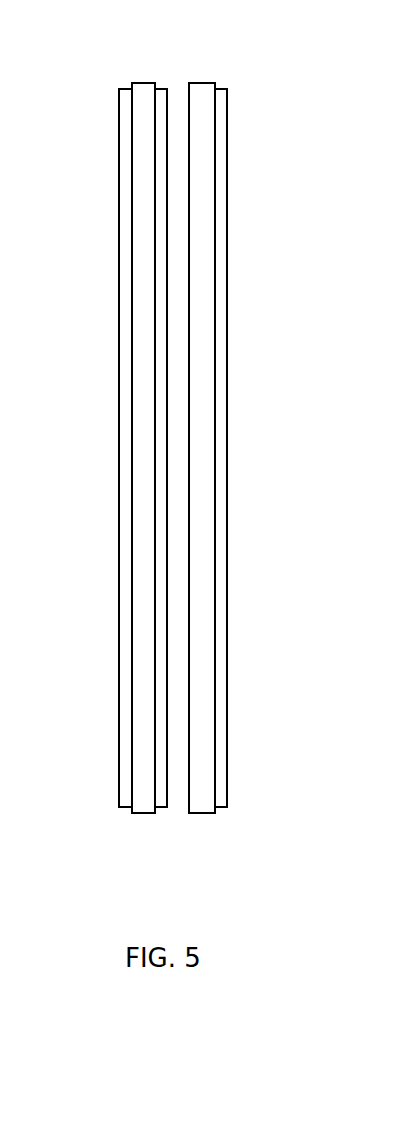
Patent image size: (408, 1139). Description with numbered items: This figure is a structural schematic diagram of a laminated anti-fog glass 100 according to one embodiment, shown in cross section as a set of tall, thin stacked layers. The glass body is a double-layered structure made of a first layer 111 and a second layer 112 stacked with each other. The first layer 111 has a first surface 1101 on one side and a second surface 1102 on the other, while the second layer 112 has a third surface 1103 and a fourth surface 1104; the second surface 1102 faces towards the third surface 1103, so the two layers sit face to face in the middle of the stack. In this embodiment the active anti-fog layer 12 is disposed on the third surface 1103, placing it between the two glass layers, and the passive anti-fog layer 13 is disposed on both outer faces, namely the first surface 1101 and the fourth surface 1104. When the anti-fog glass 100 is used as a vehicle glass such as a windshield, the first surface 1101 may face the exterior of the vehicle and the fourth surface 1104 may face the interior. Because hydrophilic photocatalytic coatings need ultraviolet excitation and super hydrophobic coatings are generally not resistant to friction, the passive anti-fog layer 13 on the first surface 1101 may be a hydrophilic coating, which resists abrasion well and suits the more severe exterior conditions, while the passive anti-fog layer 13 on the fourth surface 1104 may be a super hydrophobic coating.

The anti-fog glass 100 is at (114, 46).
The first layer 111 is at (205, 178).
The second layer 112 is at (147, 190).
The active anti-fog layer 12 is at (160, 557).
The passive anti-fog layer 13 is at (128, 330).
The first surface 1101 is at (215, 773).
The second surface 1102 is at (190, 772).
The third surface 1103 is at (157, 118).
The fourth surface 1104 is at (132, 665).